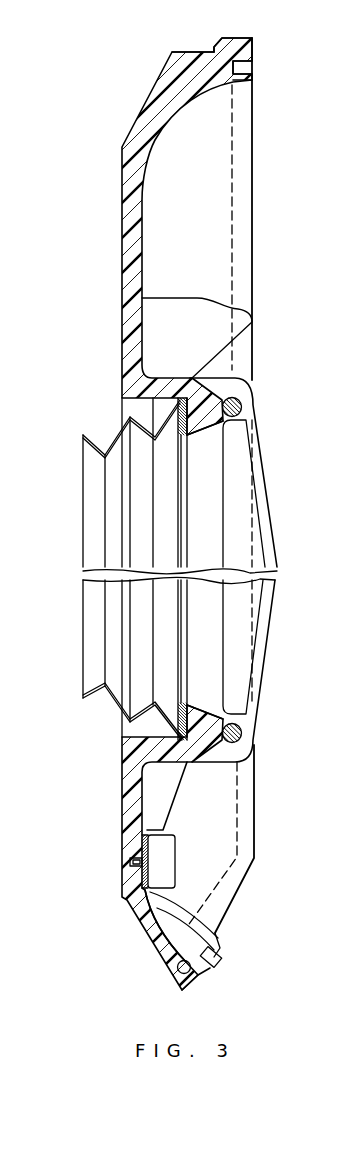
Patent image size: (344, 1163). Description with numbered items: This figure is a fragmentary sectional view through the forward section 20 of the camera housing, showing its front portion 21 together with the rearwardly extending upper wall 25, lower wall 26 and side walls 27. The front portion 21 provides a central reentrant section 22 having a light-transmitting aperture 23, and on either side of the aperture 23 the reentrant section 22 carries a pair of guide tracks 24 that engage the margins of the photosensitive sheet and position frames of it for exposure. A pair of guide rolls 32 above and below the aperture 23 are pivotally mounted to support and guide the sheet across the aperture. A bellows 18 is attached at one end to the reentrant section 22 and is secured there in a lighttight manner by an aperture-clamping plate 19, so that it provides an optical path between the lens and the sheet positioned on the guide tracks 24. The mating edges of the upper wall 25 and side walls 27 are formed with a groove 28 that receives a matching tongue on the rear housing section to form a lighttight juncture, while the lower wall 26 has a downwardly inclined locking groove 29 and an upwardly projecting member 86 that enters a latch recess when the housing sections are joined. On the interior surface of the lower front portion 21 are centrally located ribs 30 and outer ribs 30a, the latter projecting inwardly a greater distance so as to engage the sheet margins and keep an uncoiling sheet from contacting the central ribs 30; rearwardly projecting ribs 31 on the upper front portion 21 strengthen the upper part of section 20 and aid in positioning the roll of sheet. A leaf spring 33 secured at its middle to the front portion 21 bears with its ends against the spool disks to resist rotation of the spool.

The bellows 18 is at (87, 687).
The aperture-clamping plate 19 is at (181, 700).
The forward section 20 is at (120, 215).
The front portion 21 is at (124, 331).
The reentrant section 22 is at (155, 403).
The light-transmitting aperture 23 is at (203, 436).
The guide tracks 24 is at (270, 522).
The upper wall 25 is at (198, 52).
The lower wall 26 is at (158, 970).
The side walls 27 is at (222, 198).
The groove 28 is at (247, 68).
The locking groove 29 is at (198, 968).
The ribs 30 is at (172, 783).
The outer ribs 30a is at (193, 913).
The rearwardly projecting ribs 31 is at (189, 340).
The guide rolls 32 is at (245, 405).
The leaf spring 33 is at (167, 857).
The projecting member 86 is at (240, 38).